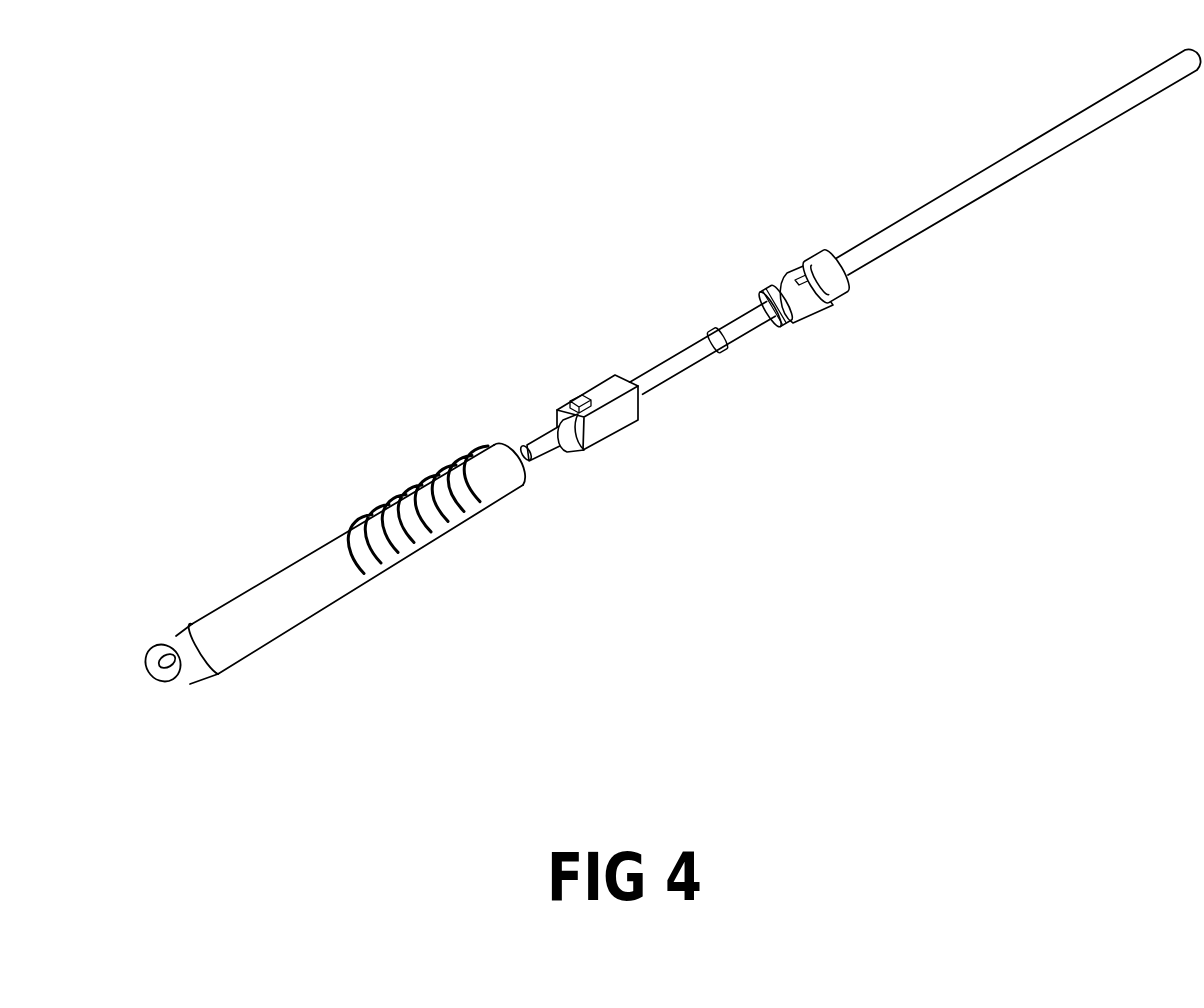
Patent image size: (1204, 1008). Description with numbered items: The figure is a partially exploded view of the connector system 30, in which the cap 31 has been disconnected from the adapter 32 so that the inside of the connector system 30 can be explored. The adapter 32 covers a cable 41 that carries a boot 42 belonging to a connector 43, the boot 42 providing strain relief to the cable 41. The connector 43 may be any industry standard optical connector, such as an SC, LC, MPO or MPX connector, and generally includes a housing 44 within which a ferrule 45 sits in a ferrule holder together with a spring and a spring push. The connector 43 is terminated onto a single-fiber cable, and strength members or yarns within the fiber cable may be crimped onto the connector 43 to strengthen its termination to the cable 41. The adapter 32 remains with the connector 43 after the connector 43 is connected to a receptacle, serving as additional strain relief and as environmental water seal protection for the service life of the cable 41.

The connector system 30 is at (670, 405).
The cap 31 is at (287, 568).
The adapter 32 is at (837, 302).
The cable 41 is at (1005, 182).
The boot 42 is at (672, 386).
The connector 43 is at (583, 364).
The housing 44 is at (621, 430).
The ferrule 45 is at (537, 463).